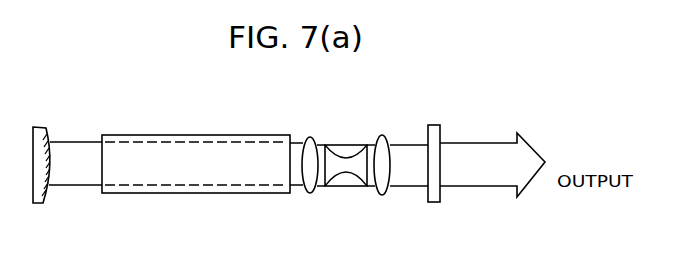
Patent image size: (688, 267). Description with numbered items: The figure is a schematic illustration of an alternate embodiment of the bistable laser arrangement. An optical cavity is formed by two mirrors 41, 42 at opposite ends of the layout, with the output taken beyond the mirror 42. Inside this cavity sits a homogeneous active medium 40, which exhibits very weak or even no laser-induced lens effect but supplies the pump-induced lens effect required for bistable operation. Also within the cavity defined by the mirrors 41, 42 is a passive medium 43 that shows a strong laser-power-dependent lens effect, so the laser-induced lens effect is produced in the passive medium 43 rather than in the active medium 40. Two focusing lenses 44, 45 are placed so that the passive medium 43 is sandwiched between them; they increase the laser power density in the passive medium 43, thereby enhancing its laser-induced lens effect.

The homogeneous active medium 40 is at (227, 135).
The mirror 41 is at (46, 127).
The mirror 42 is at (440, 125).
The passive medium 43 is at (347, 152).
The focusing lens 44 is at (310, 137).
The focusing lens 45 is at (383, 137).